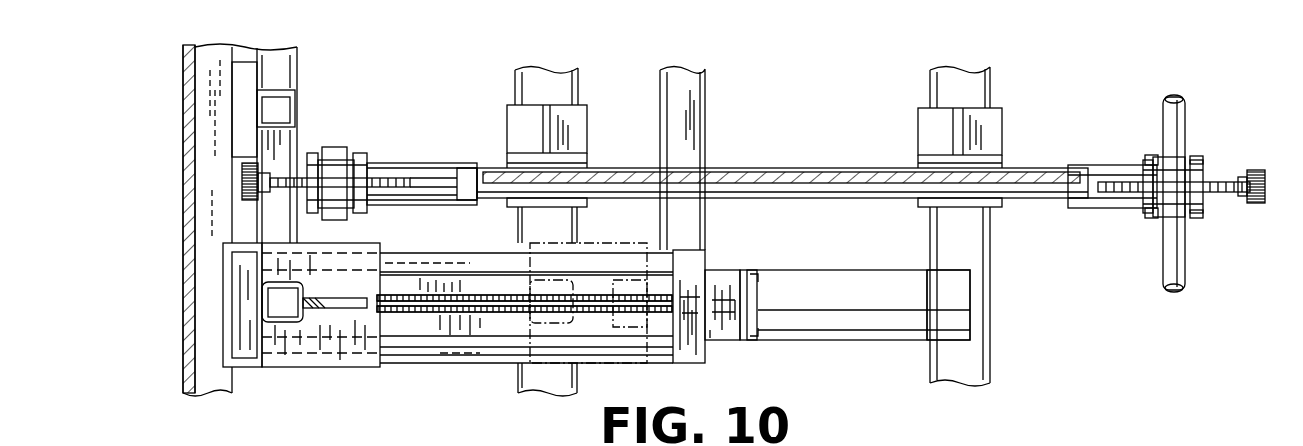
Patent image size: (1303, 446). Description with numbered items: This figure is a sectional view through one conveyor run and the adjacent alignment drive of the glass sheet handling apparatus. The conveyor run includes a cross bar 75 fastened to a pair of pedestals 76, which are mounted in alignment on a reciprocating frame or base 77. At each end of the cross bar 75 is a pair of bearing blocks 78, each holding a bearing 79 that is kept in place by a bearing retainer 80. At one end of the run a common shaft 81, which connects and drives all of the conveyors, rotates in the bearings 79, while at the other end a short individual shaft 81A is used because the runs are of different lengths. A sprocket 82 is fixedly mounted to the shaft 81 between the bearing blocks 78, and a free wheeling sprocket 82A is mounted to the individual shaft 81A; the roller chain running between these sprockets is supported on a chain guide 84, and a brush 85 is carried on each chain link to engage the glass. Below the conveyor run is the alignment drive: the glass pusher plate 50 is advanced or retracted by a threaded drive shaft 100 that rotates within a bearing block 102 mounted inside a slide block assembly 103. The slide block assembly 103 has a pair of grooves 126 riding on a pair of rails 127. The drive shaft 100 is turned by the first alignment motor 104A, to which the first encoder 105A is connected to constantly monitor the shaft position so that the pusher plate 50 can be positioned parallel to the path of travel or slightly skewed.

The pusher plate 50 is at (989, 434).
The cross bar 75 is at (812, 192).
The pedestal 76 is at (573, 132).
The reciprocating frame 77 is at (568, 80).
The bearing block 78 is at (437, 195).
The bearing 79 is at (1173, 173).
The bearing retainer 80 is at (1150, 157).
The shaft 81 is at (1172, 272).
The individual shaft 81A is at (335, 147).
The sprocket 82 is at (1215, 181).
The free wheeling sprocket 82A is at (382, 180).
The chain guide 84 is at (785, 175).
The brush 85 is at (242, 177).
The threaded drive shaft 100 is at (520, 305).
The bearing block 102 is at (613, 327).
The slide block assembly 103 is at (283, 370).
The first alignment motor 104A is at (837, 330).
The first encoder 105A is at (965, 315).
The groove 126 is at (322, 262).
The rail 127 is at (547, 262).